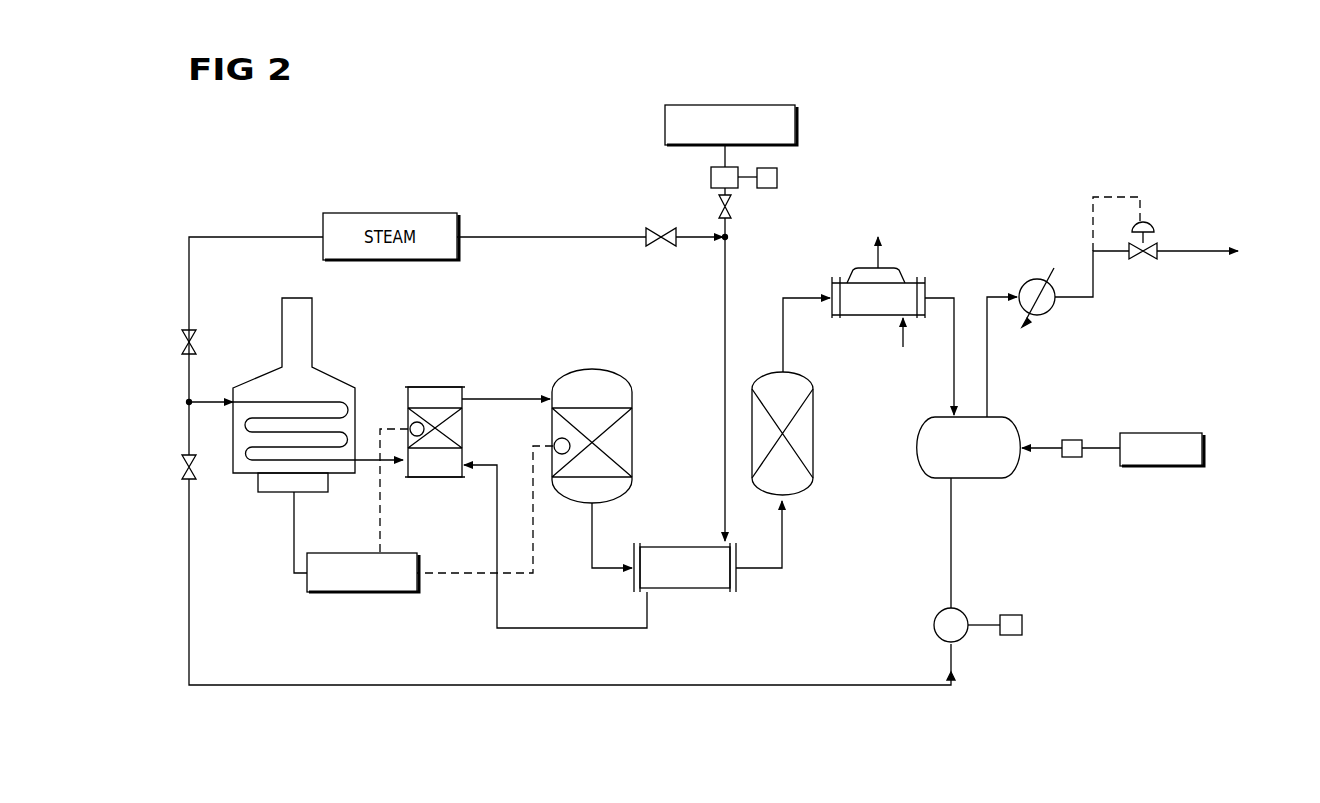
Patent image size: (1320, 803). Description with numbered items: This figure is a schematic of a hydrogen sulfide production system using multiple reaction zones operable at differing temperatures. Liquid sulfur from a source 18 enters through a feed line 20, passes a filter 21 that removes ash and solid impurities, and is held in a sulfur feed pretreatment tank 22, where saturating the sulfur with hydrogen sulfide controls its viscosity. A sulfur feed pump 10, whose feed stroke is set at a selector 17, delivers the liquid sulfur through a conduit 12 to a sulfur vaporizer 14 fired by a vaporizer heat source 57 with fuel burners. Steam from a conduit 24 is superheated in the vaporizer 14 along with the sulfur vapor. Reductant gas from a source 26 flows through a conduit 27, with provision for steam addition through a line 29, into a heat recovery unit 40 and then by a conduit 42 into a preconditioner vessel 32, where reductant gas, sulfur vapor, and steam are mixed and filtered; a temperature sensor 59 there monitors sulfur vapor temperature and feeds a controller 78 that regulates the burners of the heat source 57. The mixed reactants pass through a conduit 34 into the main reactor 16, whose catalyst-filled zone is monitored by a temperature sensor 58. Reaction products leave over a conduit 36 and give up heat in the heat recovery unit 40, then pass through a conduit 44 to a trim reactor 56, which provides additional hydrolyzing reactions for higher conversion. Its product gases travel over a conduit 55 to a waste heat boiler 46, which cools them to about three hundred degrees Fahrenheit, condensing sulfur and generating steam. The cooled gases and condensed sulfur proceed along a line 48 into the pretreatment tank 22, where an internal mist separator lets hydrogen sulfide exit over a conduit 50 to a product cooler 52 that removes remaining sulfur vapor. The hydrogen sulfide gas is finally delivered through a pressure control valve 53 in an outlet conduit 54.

The sulfur feed pump 10 is at (934, 624).
The conduit 12 is at (333, 684).
The sulfur vaporizer 14 is at (318, 375).
The reactor 16 is at (633, 428).
The selector 17 is at (1018, 630).
The source 18 is at (1204, 449).
The feed line 20 is at (1102, 449).
The filter 21 is at (1072, 458).
The sulfur feed pretreatment tank 22 is at (952, 457).
The conduit 24 is at (189, 293).
The source 26 is at (796, 125).
The conduit 27 is at (726, 341).
The line 29 is at (589, 238).
The preconditioner vessel 32 is at (440, 477).
The conduit 34 is at (497, 400).
The conduit 36 is at (593, 545).
The heat recovery unit 40 is at (671, 582).
The conduit 42 is at (565, 632).
The conduit 44 is at (783, 523).
The waste heat boiler 46 is at (895, 280).
The boiler outlet line to tank 48 is at (954, 385).
The conduit 50 is at (987, 375).
The product cooler 52 is at (1050, 310).
The pressure control valve 53 is at (1143, 259).
The conduit 54 is at (1196, 252).
The conduit 55 is at (783, 344).
The trim reactor 56 is at (813, 427).
The vaporizer heat source 57 is at (257, 478).
The temperature sensor 58 is at (554, 445).
The temperature sensor 59 is at (410, 427).
The controller 78 is at (419, 590).